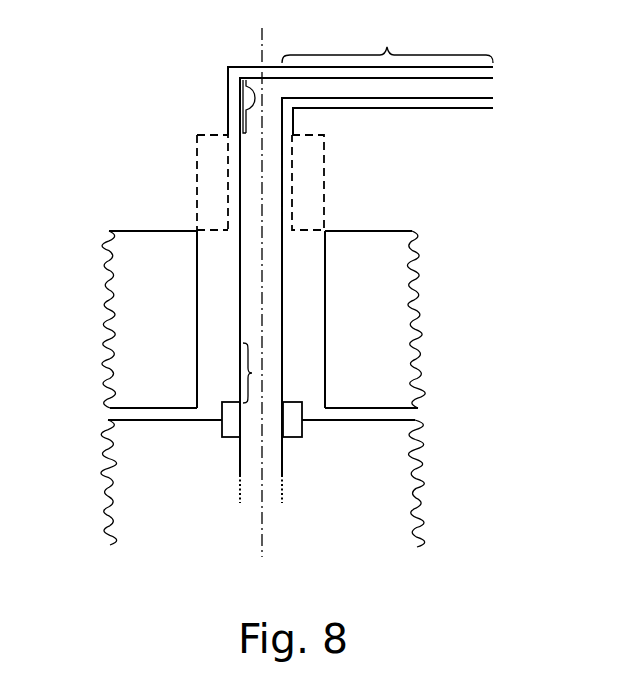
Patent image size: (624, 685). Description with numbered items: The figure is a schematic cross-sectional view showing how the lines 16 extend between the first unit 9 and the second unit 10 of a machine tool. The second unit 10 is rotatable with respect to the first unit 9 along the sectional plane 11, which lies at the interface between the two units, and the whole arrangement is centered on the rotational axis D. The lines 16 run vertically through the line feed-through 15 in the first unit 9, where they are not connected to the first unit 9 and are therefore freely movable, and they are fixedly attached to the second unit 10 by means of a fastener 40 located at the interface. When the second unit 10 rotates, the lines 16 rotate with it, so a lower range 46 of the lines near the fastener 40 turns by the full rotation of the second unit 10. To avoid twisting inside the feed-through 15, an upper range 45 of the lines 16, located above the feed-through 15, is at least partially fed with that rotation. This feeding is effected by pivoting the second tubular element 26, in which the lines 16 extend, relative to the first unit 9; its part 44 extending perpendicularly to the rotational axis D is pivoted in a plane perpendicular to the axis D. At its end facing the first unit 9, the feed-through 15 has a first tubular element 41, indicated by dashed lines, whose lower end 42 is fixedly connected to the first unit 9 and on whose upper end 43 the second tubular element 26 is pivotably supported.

The first unit 9 is at (125, 315).
The second unit 10 is at (402, 485).
The sectional plane 11 is at (410, 415).
The line feed-through 15 is at (210, 245).
The lines 16 is at (270, 207).
The second tubular element 26 is at (463, 109).
The fastener 40 is at (230, 420).
The first tubular element 41 is at (210, 153).
The lower end 42 is at (218, 239).
The upper end 43 is at (210, 131).
The part of the second tubular element 44 is at (387, 39).
The upper range 45 is at (257, 98).
The lower range 46 is at (263, 373).
The rotational axis D is at (263, 153).